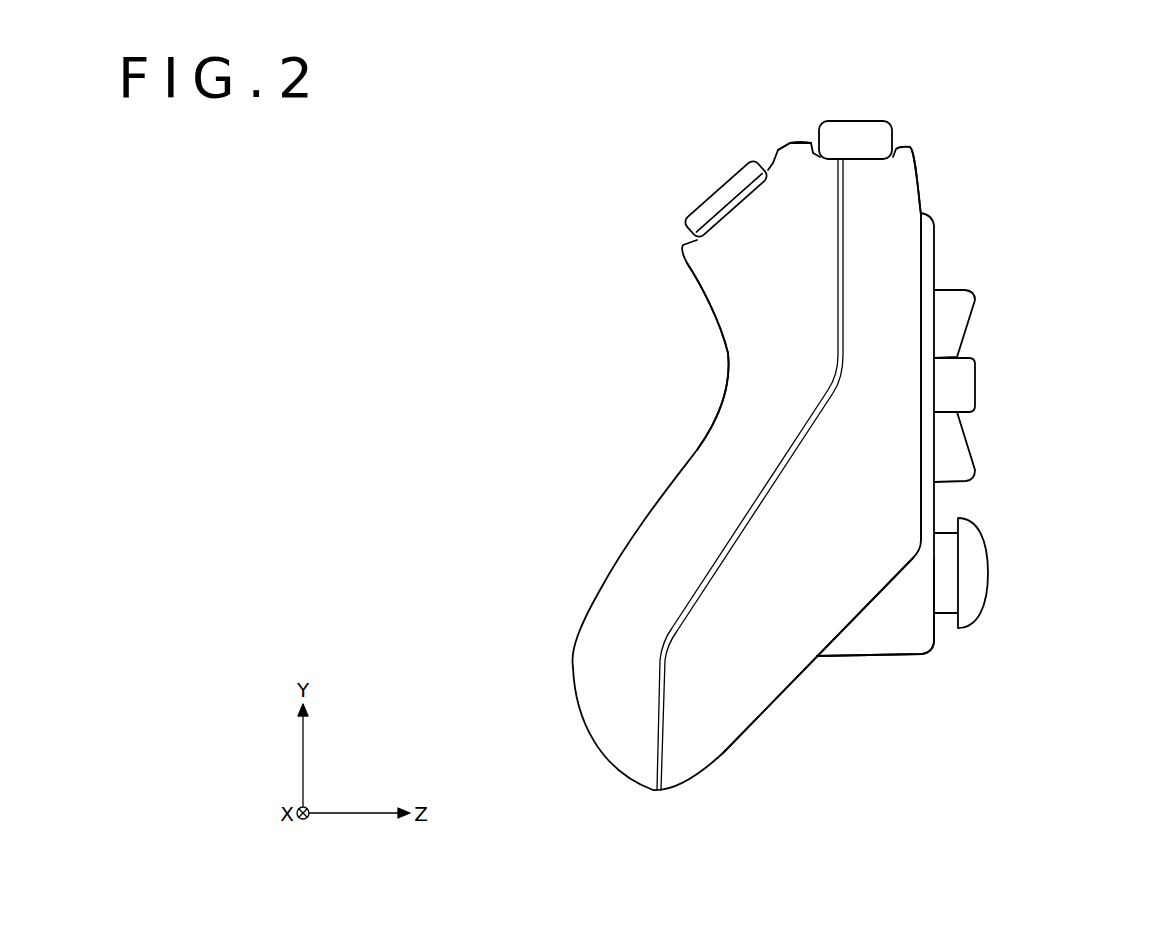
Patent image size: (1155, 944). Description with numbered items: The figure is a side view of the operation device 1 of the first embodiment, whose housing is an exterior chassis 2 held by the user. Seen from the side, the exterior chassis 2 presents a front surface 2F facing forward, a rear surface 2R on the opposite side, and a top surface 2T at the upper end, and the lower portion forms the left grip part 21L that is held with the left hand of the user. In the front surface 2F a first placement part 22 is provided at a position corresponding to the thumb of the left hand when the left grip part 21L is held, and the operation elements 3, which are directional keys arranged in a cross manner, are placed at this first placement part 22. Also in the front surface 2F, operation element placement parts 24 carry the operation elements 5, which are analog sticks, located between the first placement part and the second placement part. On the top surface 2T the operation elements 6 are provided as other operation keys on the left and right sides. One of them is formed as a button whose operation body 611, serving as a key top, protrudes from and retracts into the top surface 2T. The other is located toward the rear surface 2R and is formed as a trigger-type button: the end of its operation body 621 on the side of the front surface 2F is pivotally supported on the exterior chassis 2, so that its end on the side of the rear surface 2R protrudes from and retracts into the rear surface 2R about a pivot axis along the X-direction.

The operation device 1 is at (1076, 134).
The exterior chassis 2 is at (680, 792).
The top surface 2T is at (793, 138).
The front surface 2F is at (913, 178).
The rear surface 2R is at (700, 287).
The operation elements 3 is at (955, 291).
The operation elements 5 is at (988, 572).
The operation elements 6 is at (855, 118).
The first placement part 22 is at (937, 250).
The operation element placement parts 24 is at (938, 637).
The left grip part 21L is at (752, 703).
The operation body 611 is at (868, 148).
The operation body 621 is at (727, 197).